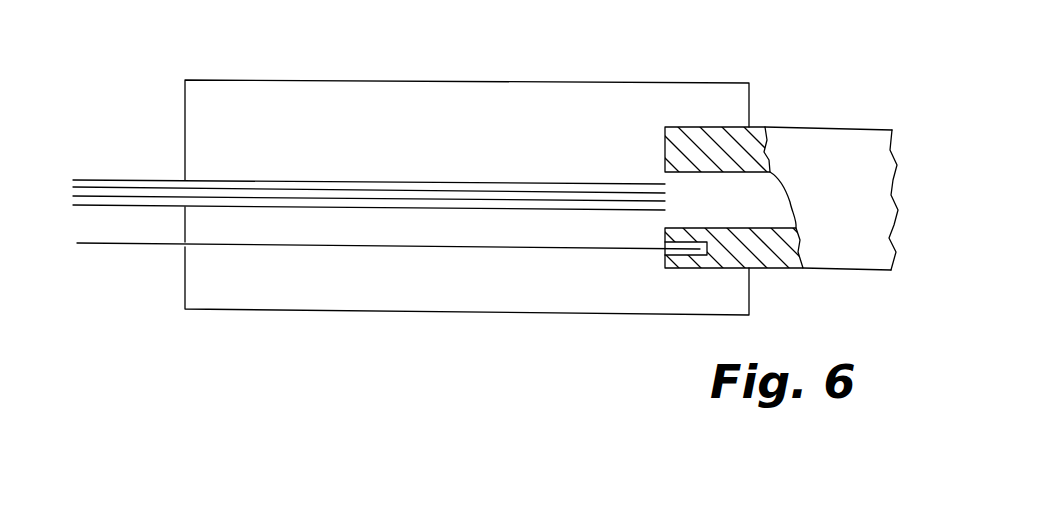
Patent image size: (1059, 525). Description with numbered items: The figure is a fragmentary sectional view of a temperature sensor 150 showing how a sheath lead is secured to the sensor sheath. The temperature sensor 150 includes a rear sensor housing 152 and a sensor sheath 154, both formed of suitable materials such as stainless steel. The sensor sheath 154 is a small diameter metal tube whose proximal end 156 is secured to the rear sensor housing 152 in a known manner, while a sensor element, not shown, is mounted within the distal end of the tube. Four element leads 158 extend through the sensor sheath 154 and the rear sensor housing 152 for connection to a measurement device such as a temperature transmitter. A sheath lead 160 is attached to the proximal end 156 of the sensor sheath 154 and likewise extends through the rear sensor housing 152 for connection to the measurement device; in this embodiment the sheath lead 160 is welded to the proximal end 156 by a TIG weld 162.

The temperature sensor 150 is at (232, 70).
The rear sensor housing 152 is at (210, 308).
The sensor sheath 154 is at (811, 271).
The proximal end 156 is at (663, 134).
The element leads 158 is at (162, 182).
The sheath lead 160 is at (338, 241).
The TIG weld 162 is at (662, 256).